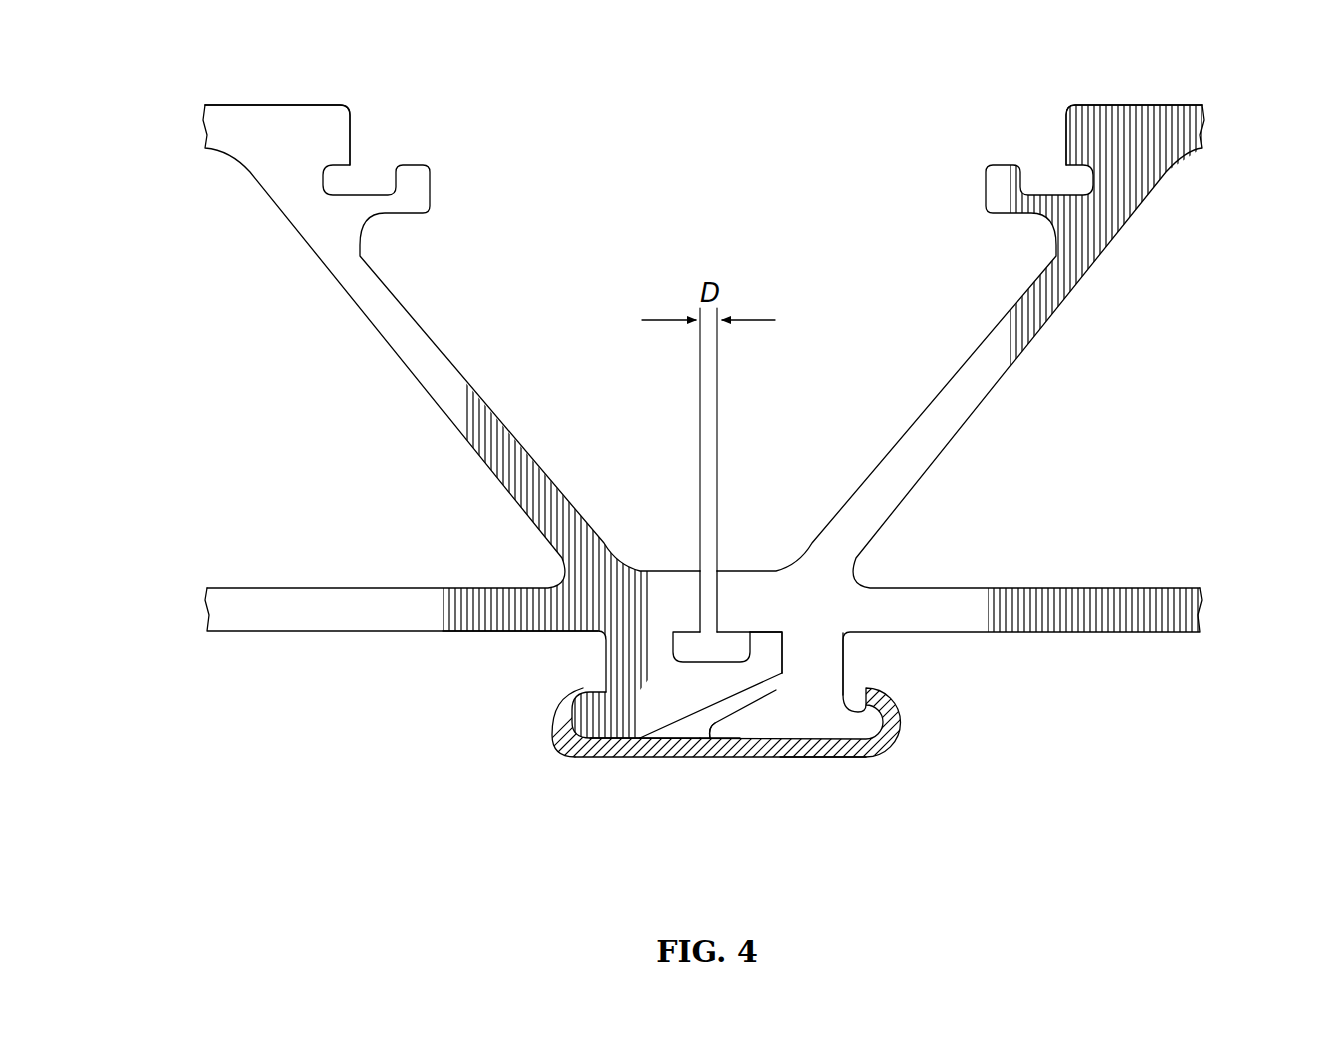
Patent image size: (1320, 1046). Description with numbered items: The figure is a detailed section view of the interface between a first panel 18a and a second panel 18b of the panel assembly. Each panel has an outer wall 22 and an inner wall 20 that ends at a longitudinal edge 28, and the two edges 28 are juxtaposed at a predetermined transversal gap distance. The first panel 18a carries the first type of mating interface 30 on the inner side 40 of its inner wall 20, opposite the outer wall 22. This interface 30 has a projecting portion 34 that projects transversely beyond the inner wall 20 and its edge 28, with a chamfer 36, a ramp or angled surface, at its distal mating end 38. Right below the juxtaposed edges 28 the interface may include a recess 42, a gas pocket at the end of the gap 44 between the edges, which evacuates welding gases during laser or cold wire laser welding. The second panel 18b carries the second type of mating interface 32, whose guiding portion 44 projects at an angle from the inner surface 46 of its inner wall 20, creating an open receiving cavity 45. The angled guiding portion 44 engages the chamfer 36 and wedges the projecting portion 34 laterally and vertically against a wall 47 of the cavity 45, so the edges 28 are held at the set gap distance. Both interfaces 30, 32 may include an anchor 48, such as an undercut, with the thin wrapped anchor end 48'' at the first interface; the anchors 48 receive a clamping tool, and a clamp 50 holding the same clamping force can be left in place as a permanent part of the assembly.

The first panel 18a is at (257, 102).
The second panel 18b is at (1145, 101).
The outer wall 22 is at (242, 128).
The inner wall 20 is at (347, 613).
The longitudinal edge 28 is at (699, 570).
The first type of mating interface 30 is at (613, 740).
The second type of mating interface 32 is at (828, 727).
The projecting portion 34 is at (718, 690).
The chamfer 36 is at (688, 712).
The distal mating end 38 is at (765, 663).
The inner side 40 is at (497, 636).
The recess 42 is at (693, 645).
The gap 44 is at (747, 697).
The receiving cavity 45 is at (770, 703).
The inner surface 46 is at (895, 637).
The wall of the cavity 47 is at (742, 632).
The anchor 48 is at (768, 757).
The curled end of thin plate 48'' is at (528, 739).
The clamp 50 is at (713, 727).